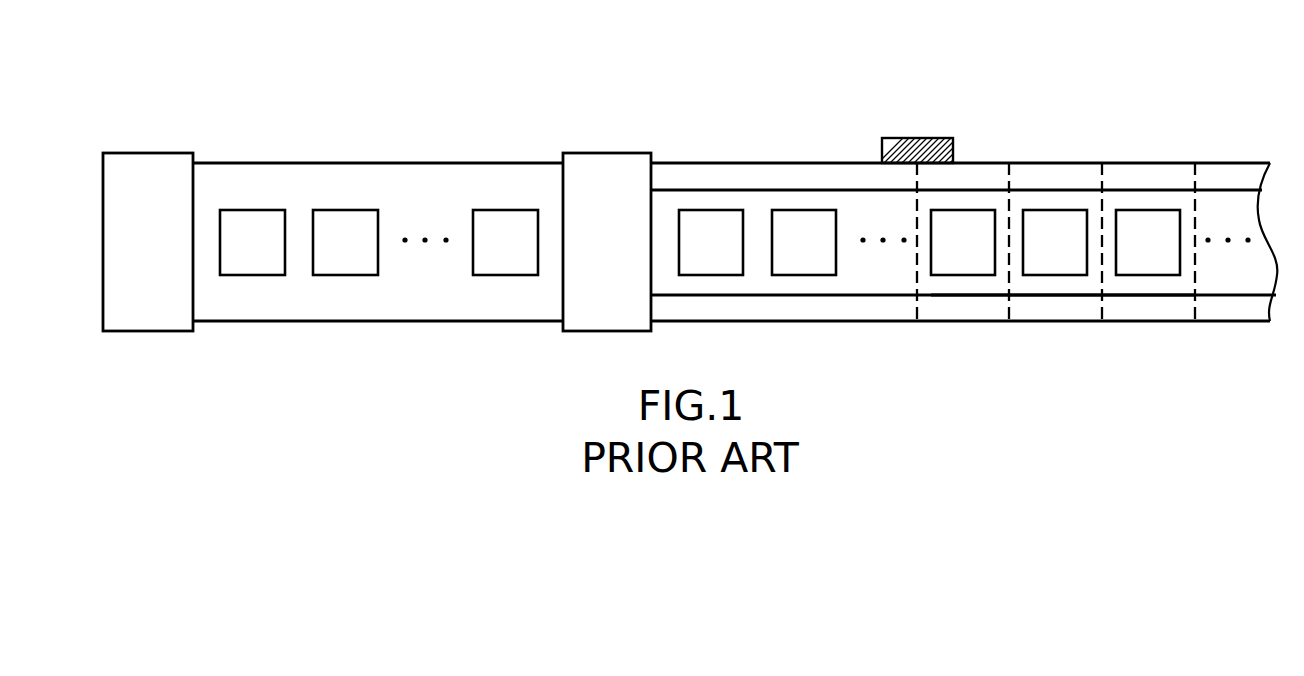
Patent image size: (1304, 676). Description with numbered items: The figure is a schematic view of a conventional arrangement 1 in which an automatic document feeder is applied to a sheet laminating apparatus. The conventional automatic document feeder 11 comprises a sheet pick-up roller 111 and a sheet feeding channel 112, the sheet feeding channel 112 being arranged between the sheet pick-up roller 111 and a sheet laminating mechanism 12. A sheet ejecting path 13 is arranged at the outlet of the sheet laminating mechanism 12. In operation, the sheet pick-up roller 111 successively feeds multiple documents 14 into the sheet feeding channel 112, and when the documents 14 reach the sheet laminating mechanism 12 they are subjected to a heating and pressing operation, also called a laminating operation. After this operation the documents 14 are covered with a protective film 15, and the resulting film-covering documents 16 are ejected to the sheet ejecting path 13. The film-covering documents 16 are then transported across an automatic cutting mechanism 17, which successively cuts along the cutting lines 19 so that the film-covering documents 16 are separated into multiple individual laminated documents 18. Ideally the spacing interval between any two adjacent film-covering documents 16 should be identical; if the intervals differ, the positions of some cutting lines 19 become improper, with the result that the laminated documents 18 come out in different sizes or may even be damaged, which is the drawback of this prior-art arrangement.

The display device (prior art) 1 is at (403, 39).
The conventional automatic document feeder 11 is at (294, 158).
The sheet pick-up roller 111 is at (148, 242).
The sheet feeding channel 112 is at (353, 308).
The sheet laminating mechanism 12 is at (607, 242).
The sheet ejecting path 13 is at (740, 308).
The documents 14 is at (379, 242).
The protective film 15 is at (757, 190).
The film-covering documents 16 is at (929, 242).
The automatic cutting mechanism 17 is at (935, 138).
The laminated documents 18 is at (1145, 285).
The cutting lines 19 is at (917, 303).